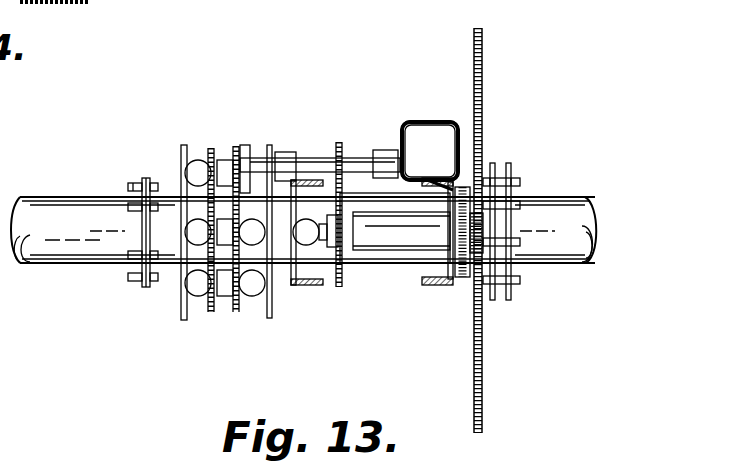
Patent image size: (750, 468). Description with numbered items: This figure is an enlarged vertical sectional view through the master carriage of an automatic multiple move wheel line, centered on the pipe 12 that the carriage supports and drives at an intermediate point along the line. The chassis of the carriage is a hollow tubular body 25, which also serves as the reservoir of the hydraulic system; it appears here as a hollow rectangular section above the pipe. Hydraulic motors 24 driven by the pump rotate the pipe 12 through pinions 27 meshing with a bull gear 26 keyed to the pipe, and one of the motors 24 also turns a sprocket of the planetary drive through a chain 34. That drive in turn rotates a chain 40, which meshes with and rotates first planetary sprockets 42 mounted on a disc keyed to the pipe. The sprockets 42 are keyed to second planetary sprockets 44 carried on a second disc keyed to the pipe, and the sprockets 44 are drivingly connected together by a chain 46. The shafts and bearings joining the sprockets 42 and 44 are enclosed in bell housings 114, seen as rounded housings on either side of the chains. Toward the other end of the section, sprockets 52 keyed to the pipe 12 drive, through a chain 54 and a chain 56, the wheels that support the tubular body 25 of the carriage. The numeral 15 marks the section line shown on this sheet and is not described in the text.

The pipe 12 is at (97, 197).
The section line 15 is at (391, 0).
The hydraulic motors 24 is at (400, 236).
The tubular body 25 is at (443, 123).
The bull gear 26 is at (482, 66).
The pinions 27 is at (470, 290).
The chain 34 is at (363, 177).
The chain 40 is at (232, 150).
The first planetary sprockets 42 is at (246, 268).
The second planetary sprockets 44 is at (292, 272).
The chain 46 is at (209, 160).
The sprockets 52 is at (513, 223).
The chain 54 is at (508, 168).
The chain 56 is at (500, 166).
The bell housings 114 is at (252, 297).